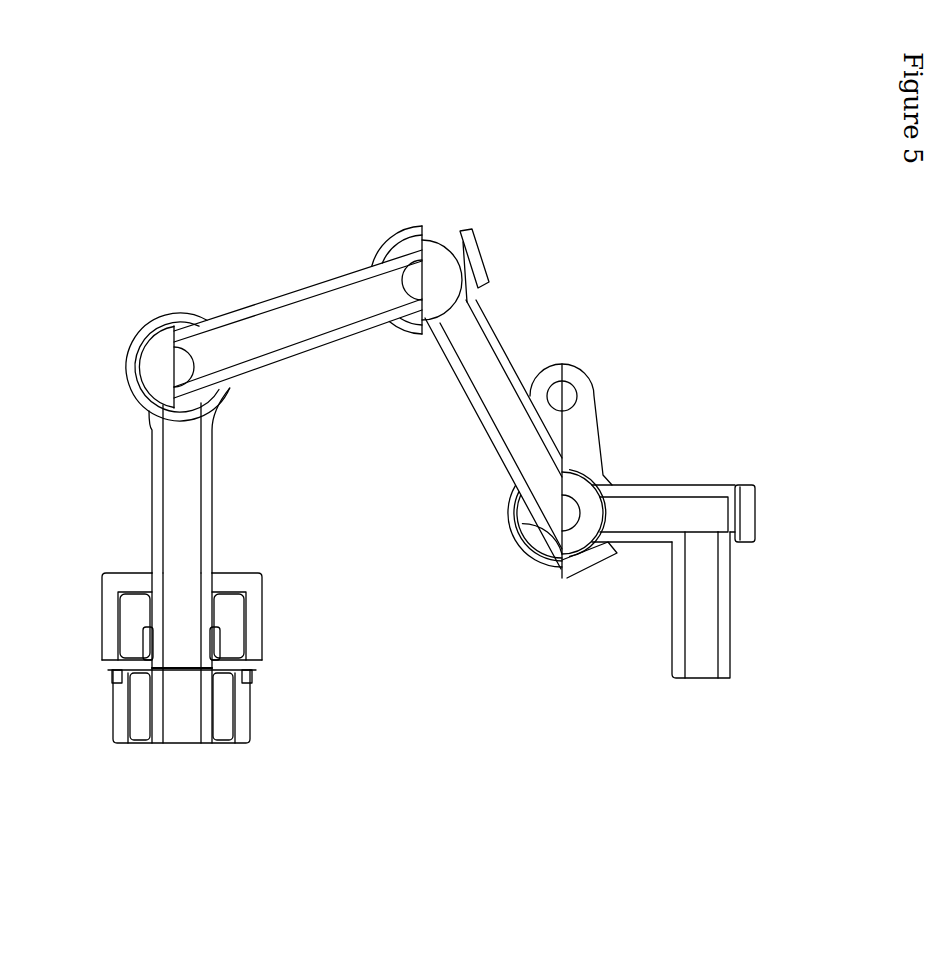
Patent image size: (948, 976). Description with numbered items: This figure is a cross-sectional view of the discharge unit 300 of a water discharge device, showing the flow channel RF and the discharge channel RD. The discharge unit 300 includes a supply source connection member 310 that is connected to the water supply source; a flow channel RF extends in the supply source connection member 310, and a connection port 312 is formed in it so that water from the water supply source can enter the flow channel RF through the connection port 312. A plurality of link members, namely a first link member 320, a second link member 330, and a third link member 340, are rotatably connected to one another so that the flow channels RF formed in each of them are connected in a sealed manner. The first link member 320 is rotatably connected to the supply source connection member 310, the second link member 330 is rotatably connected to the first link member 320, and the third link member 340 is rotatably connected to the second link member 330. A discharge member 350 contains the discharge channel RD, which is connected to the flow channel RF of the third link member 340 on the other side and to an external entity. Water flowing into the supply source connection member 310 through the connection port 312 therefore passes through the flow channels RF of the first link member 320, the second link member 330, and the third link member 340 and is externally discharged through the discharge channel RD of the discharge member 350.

The discharge unit 300 is at (98, 170).
The supply source connection member 310 is at (745, 613).
The connection port 312 is at (727, 660).
The first link member 320 is at (501, 334).
The second link member 330 is at (300, 278).
The third link member 340 is at (140, 470).
The discharge member 350 is at (122, 757).
The flow channel RF is at (292, 319).
The discharge channel RD is at (172, 712).